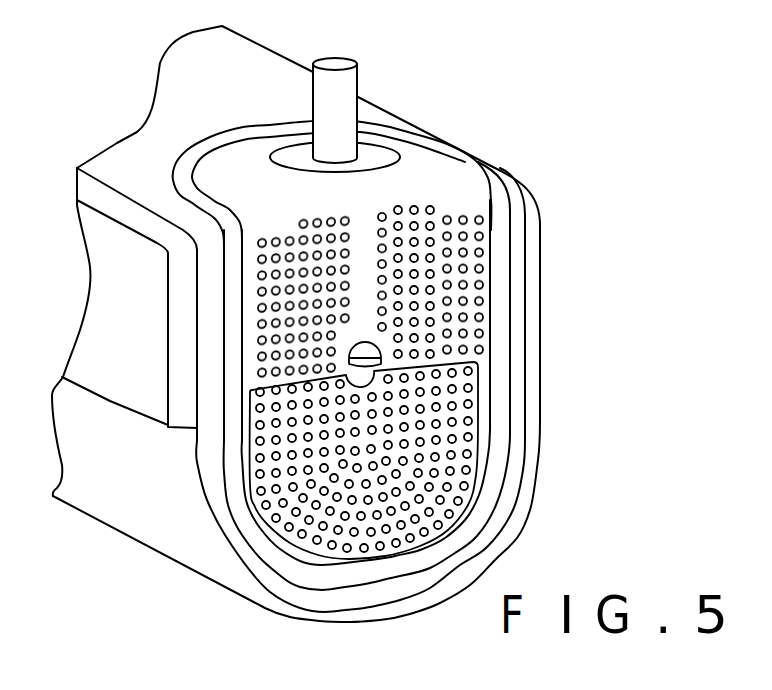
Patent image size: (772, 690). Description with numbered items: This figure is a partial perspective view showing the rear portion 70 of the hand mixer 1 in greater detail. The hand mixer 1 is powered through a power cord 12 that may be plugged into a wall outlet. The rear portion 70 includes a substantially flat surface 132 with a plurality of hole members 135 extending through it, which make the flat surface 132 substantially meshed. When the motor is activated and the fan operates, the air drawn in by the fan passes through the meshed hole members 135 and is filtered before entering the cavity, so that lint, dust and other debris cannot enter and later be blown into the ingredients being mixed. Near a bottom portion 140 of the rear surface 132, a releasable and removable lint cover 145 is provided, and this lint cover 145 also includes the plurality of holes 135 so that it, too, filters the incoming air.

The hand mixer 1 is at (577, 133).
The power cord 12 is at (336, 96).
The rear portion 70 is at (565, 340).
The flat surface 132 is at (443, 272).
The hole members 135 is at (430, 456).
The bottom portion 140 is at (261, 626).
The lint cover 145 is at (405, 491).